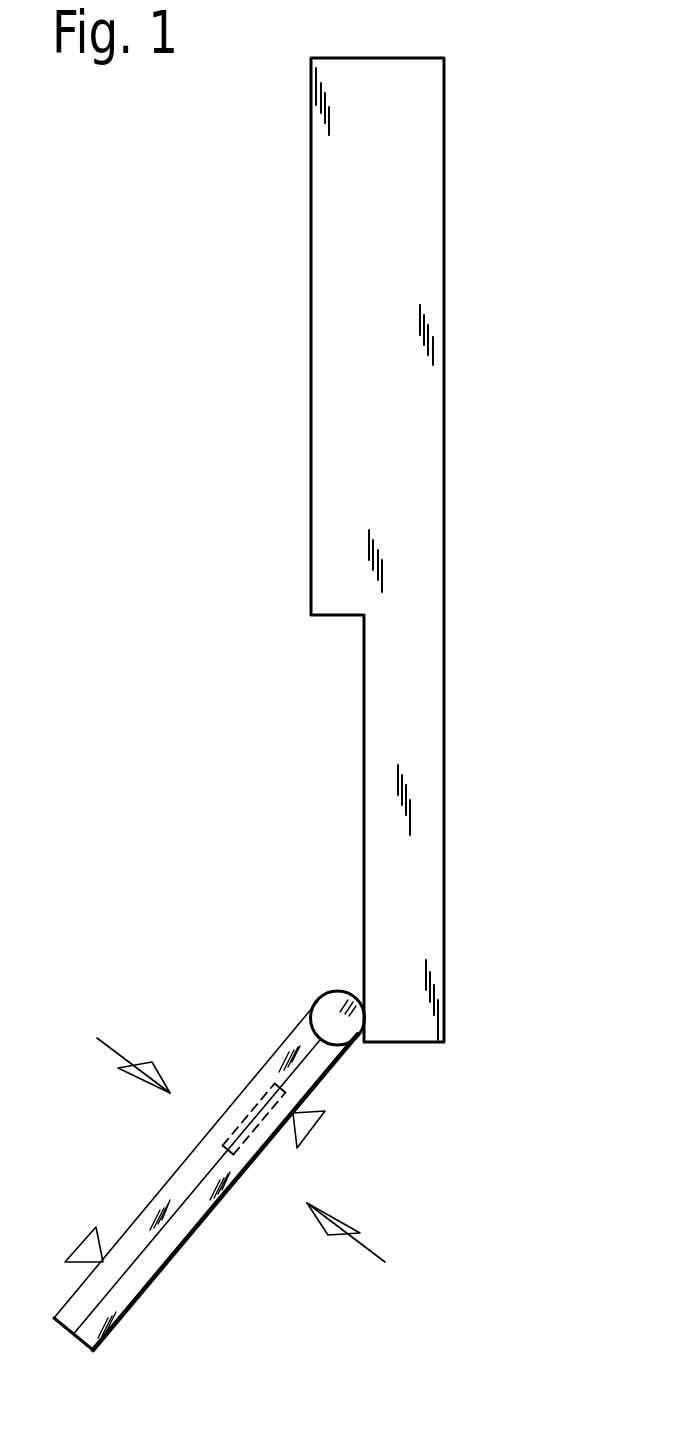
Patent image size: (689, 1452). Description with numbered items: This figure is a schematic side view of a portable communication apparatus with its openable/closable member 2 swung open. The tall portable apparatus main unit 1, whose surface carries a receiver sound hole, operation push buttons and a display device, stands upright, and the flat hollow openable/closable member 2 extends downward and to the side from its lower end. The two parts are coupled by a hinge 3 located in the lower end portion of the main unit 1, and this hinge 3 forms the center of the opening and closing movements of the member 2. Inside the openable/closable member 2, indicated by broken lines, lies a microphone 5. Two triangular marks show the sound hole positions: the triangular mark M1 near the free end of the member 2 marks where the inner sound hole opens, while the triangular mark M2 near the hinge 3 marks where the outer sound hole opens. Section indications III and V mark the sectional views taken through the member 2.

The portable apparatus main unit 1 is at (441, 298).
The openable/closable member 2 is at (198, 1222).
The hinge 3 is at (352, 1021).
The microphone 5 is at (259, 1108).
The section line III is at (124, 1045).
The triangular mark M1 is at (87, 1245).
The triangular mark M2 is at (315, 1124).
The section line V is at (361, 1251).